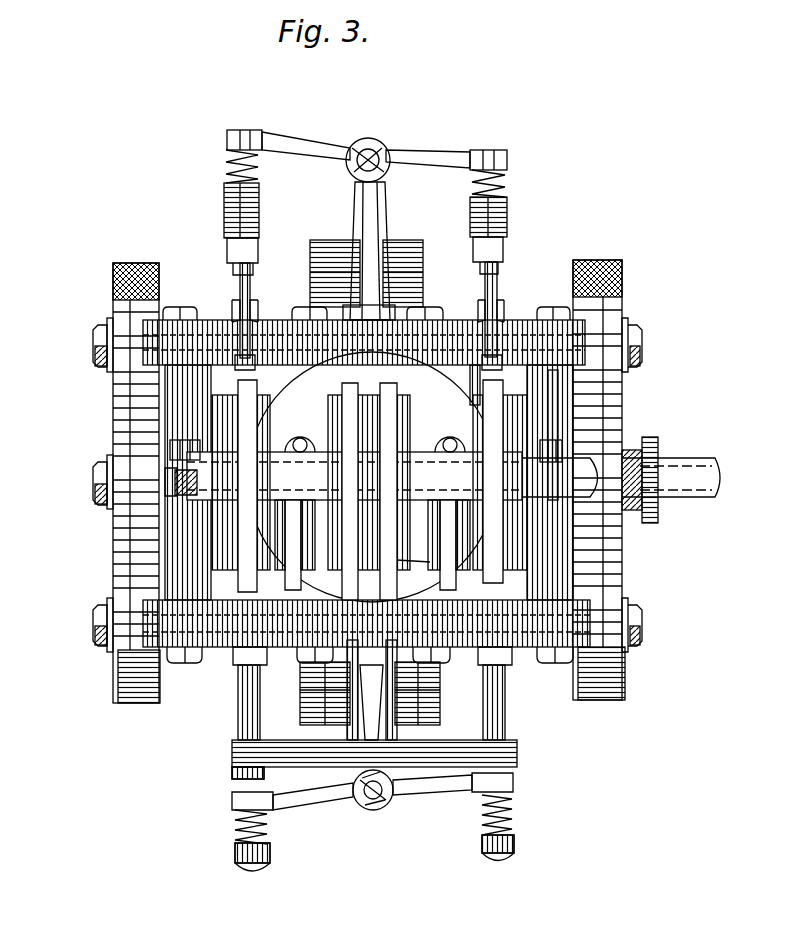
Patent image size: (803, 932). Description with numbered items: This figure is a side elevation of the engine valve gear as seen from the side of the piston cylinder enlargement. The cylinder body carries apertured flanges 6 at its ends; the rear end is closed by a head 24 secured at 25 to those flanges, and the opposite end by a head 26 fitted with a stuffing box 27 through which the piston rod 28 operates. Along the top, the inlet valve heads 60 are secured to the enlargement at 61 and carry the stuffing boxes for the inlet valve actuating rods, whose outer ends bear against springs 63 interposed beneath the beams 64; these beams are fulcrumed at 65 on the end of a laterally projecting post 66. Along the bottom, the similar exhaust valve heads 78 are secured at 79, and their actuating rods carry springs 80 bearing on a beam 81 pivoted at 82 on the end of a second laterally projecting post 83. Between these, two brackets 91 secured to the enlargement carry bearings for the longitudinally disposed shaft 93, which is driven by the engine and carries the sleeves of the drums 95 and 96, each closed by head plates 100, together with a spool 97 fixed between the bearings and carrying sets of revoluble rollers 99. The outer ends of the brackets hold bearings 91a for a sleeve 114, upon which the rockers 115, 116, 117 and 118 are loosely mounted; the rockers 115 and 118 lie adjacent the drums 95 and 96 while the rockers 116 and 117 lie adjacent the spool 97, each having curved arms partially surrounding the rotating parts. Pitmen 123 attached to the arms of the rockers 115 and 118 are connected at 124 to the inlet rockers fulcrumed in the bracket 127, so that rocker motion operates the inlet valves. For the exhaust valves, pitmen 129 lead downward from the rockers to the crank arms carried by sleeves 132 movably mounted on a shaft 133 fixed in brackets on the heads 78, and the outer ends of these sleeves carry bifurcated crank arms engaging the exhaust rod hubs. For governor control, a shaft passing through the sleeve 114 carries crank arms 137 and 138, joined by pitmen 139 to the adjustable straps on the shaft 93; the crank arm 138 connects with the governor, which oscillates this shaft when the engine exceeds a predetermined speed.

The apertured flanges 6 is at (148, 703).
The head 24 is at (113, 268).
The securing means 25 is at (94, 348).
The head 26 is at (622, 395).
The stuffing box 27 is at (656, 522).
The piston rod 28 is at (700, 462).
The heads 60 is at (268, 320).
The securing means 61 is at (175, 307).
The springs 63 is at (226, 174).
The beams 64 is at (420, 160).
The fulcrum 65 is at (352, 170).
The laterally projecting post 66 is at (378, 232).
The heads 78 is at (222, 648).
The securing means 79 is at (185, 665).
The springs 80 is at (238, 820).
The beam 81 is at (320, 798).
The pivot 82 is at (375, 806).
The laterally projecting post 83 is at (430, 705).
The brackets 91 is at (374, 545).
The bearings 91a is at (354, 468).
The shaft 93 is at (565, 468).
The drum 95 is at (508, 400).
The drum 96 is at (230, 570).
The spool 97 is at (335, 528).
The rollers 99 is at (392, 556).
The head plates 100 is at (215, 558).
The sleeve 114 is at (200, 496).
The rocker 115 is at (262, 395).
The rocker 116 is at (354, 491).
The rocker 117 is at (393, 491).
The rocker 118 is at (500, 481).
The pitmen 123 is at (238, 298).
The connection 124 is at (224, 220).
The bracket 127 is at (262, 244).
The guide block 129 is at (320, 690).
The sleeves 132 is at (342, 790).
The shaft 133 is at (232, 752).
The crank arm 137 is at (185, 468).
The crank arm 138 is at (560, 412).
The pitmen 139 is at (175, 452).